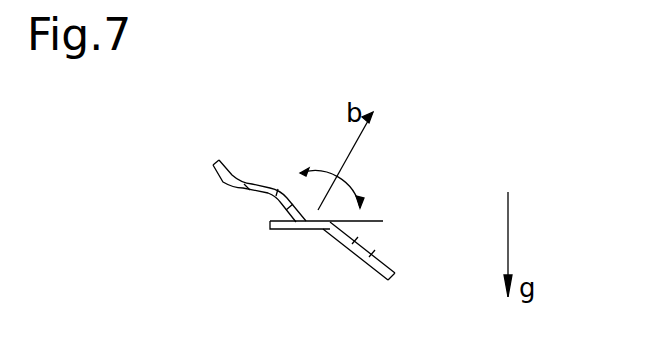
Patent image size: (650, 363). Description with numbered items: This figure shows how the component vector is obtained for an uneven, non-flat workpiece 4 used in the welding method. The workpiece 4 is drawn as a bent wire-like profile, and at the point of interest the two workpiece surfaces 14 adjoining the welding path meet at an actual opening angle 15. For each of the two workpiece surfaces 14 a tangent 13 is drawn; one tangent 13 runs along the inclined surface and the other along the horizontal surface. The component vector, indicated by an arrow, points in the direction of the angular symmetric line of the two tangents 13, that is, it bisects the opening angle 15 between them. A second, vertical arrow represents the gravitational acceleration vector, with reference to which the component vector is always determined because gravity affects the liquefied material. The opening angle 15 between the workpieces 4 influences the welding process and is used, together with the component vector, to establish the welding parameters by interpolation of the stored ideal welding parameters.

The workpiece 4 is at (228, 183).
The tangents 13 is at (303, 210).
The workpiece surfaces 14 is at (249, 182).
The opening angle 15 is at (352, 188).